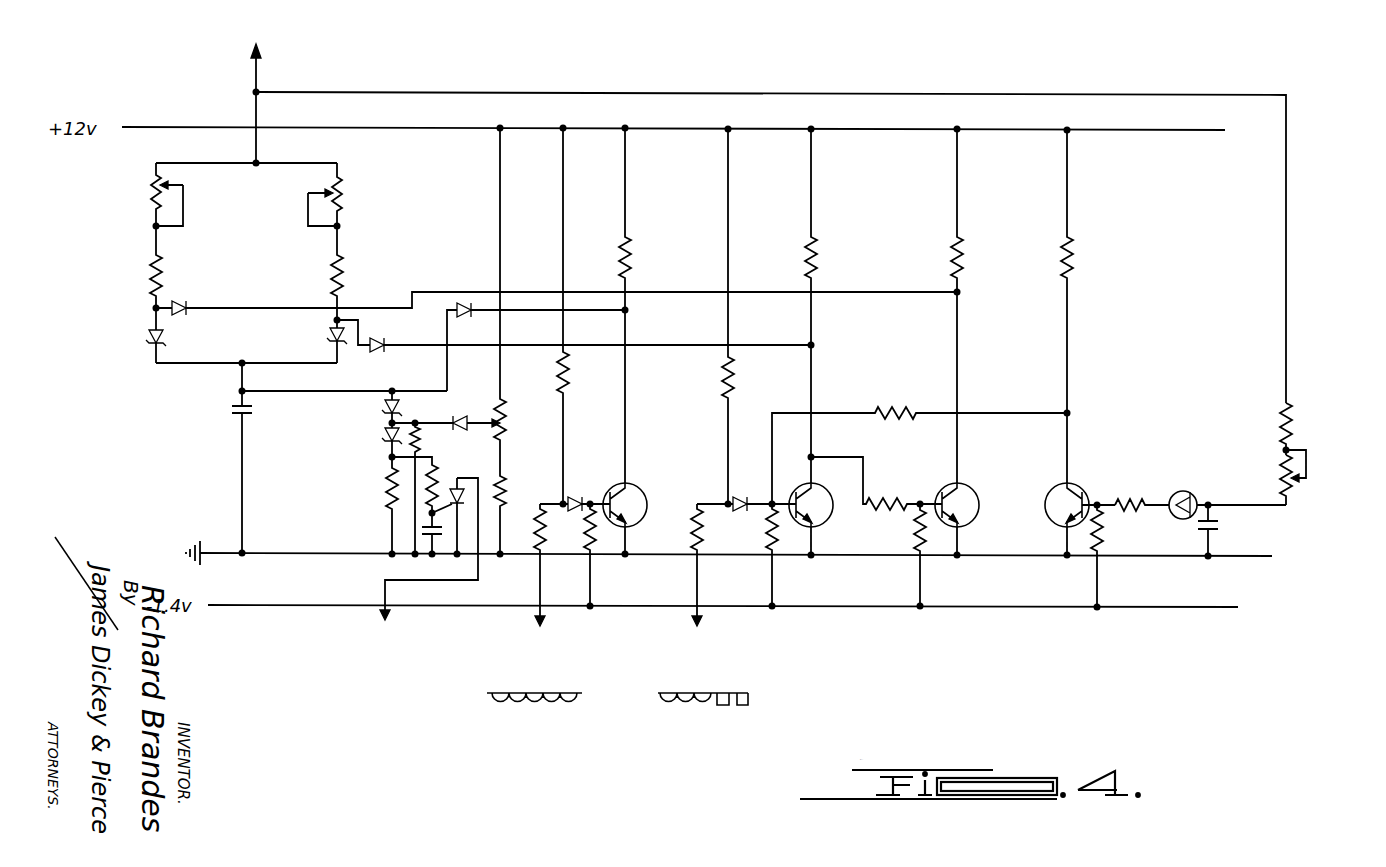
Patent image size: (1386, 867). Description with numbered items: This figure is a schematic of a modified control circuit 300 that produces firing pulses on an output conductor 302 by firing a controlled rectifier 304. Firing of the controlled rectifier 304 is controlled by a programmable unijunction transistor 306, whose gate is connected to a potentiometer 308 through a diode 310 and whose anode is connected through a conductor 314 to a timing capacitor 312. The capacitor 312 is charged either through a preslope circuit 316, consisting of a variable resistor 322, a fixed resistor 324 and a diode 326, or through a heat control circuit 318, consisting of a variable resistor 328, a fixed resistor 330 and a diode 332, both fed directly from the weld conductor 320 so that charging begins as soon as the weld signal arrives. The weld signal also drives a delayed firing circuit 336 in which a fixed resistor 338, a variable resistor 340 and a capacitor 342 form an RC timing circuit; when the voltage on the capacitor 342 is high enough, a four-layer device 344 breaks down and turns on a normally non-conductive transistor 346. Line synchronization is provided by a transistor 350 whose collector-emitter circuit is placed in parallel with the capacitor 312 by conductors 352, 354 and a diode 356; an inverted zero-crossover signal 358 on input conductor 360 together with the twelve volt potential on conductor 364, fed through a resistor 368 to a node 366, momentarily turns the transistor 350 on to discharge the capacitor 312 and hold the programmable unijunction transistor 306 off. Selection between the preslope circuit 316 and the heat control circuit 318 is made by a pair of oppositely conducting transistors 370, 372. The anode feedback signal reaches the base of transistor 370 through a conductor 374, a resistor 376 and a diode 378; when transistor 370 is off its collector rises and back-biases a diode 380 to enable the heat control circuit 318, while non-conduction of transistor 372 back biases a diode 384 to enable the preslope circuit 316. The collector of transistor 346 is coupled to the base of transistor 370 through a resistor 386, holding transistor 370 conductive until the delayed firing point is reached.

The circuit 300 is at (690, 392).
The output conductor 302 is at (482, 588).
The controlled rectifier 304 is at (448, 492).
The programmable unijunction transistor 306 is at (388, 435).
The potentiometer 308 is at (504, 422).
The diode 310 is at (457, 416).
The capacitor 312 is at (234, 410).
The conductor 314 is at (290, 396).
The preslope circuit 316 is at (130, 240).
The heat control circuit 318 is at (368, 244).
The weld conductor 320 is at (258, 72).
The variable resistor 322 is at (156, 182).
The fixed resistor 324 is at (150, 276).
The diode 326 is at (150, 342).
The variable resistor 328 is at (342, 191).
The fixed resistor 330 is at (347, 292).
The diode 332 is at (330, 336).
The delayed firing circuit 336 is at (1310, 535).
The fixed resistor 338 is at (1291, 414).
The variable resistor 340 is at (1280, 463).
The capacitor 342 is at (1222, 532).
The four-layer device 344 is at (1181, 491).
The transistor 346 is at (1082, 488).
The transistor 350 is at (641, 490).
The conductor 352 is at (422, 388).
The conductor 354 is at (528, 305).
The diode 356 is at (460, 304).
The inverted signal 358 is at (535, 708).
The input conductor 360 is at (541, 583).
The conductor 364 is at (203, 127).
The node 366 is at (562, 498).
The resistor 368 is at (562, 372).
The transistor 370 is at (828, 520).
The transistor 372 is at (968, 490).
The conductor 374 is at (699, 577).
The resistor 376 is at (697, 510).
The diode 378 is at (741, 497).
The diode 380 is at (378, 338).
The diode 384 is at (185, 303).
The resistor 386 is at (884, 408).